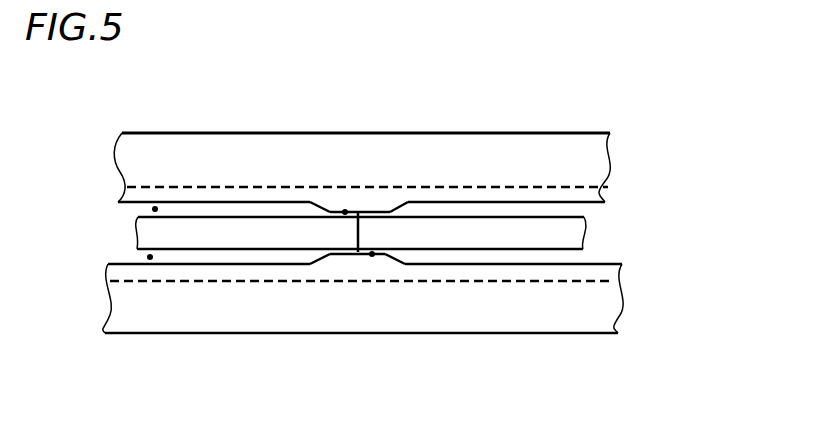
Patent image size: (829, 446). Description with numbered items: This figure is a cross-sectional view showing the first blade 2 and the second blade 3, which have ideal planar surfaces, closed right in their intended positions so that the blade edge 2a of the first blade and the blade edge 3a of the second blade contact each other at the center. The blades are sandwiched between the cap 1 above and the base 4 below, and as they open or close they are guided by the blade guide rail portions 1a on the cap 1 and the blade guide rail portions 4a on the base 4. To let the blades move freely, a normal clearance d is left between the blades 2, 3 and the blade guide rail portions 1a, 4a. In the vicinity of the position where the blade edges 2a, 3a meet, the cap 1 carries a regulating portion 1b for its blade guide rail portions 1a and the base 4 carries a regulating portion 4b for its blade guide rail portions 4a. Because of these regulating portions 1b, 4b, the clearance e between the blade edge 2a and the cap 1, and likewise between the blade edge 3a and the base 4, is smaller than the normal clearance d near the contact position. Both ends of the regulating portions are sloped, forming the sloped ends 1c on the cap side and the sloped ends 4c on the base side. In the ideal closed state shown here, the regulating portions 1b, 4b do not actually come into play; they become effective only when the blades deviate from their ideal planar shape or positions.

The cap 1 is at (595, 153).
The blade guide rail portions 1a is at (598, 190).
The regulating portion 1b is at (364, 203).
The sloped ends 1c is at (322, 205).
The first blade 2 is at (572, 235).
The blade edge 2a is at (331, 240).
The second blade 3 is at (152, 228).
The blade edge 3a is at (331, 240).
The base 4 is at (607, 310).
The blade guide rail portions 4a is at (610, 270).
The regulating portion 4b is at (361, 266).
The sloped ends 4c is at (320, 262).
The clearance d is at (155, 209).
The clearance e is at (345, 212).